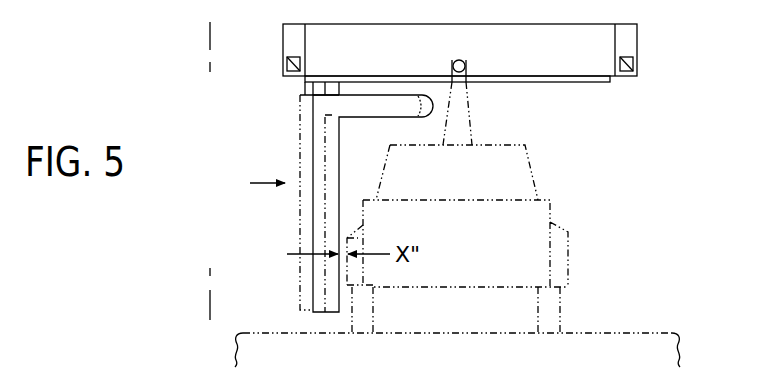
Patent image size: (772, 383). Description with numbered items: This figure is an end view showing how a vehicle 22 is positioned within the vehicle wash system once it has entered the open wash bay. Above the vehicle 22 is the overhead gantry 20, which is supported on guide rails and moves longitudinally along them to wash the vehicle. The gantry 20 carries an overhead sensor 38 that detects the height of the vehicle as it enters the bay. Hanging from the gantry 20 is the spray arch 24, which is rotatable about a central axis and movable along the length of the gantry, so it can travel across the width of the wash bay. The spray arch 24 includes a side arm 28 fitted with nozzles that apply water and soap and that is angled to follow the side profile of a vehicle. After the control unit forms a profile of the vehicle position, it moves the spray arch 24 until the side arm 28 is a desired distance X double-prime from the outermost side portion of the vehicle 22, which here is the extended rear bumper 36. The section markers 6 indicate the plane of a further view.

The section line 6- 6 is at (208, 30).
The overhead gantry 20 is at (558, 68).
The vehicle 22 is at (545, 165).
The spray arch 24 is at (297, 130).
The side arm 28 is at (340, 168).
The rear bumper 36 is at (368, 232).
The overhead sensor 38 is at (457, 60).